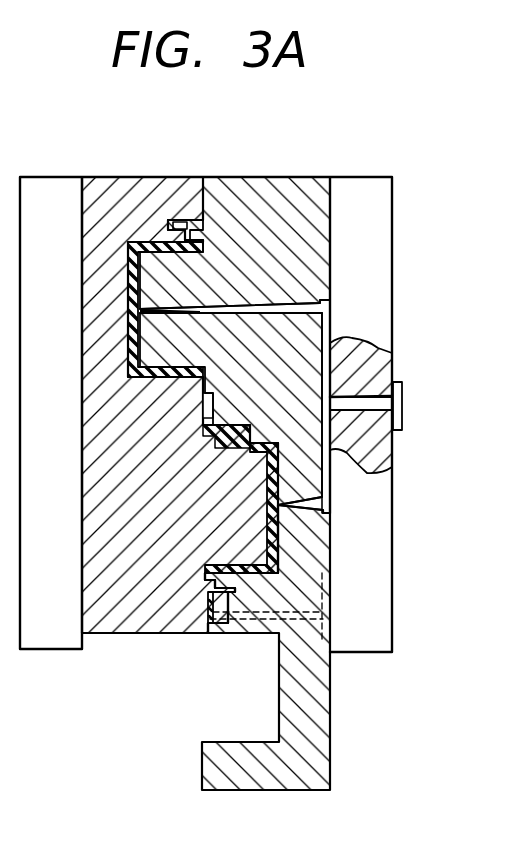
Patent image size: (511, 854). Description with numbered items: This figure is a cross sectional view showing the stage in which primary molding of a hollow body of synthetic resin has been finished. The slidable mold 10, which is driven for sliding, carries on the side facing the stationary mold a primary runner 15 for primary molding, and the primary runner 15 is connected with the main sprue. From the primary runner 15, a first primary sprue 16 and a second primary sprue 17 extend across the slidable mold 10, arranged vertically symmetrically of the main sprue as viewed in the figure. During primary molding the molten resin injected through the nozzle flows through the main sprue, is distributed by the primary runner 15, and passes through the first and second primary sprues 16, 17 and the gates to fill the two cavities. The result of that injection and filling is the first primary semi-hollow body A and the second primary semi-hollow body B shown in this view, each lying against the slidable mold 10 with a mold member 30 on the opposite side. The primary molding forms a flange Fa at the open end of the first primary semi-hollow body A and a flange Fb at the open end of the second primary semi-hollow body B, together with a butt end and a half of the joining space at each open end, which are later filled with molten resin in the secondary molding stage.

The rotor member 30 is at (128, 180).
The slidable mold 10 is at (278, 180).
The primary runner 15 is at (325, 437).
The first primary sprue 16 is at (275, 307).
The second primary sprue 17 is at (305, 486).
The first primary semi-hollow body A is at (133, 283).
The second primary semi-hollow body B is at (287, 557).
The flange Fa is at (170, 219).
The flange Fb is at (232, 597).